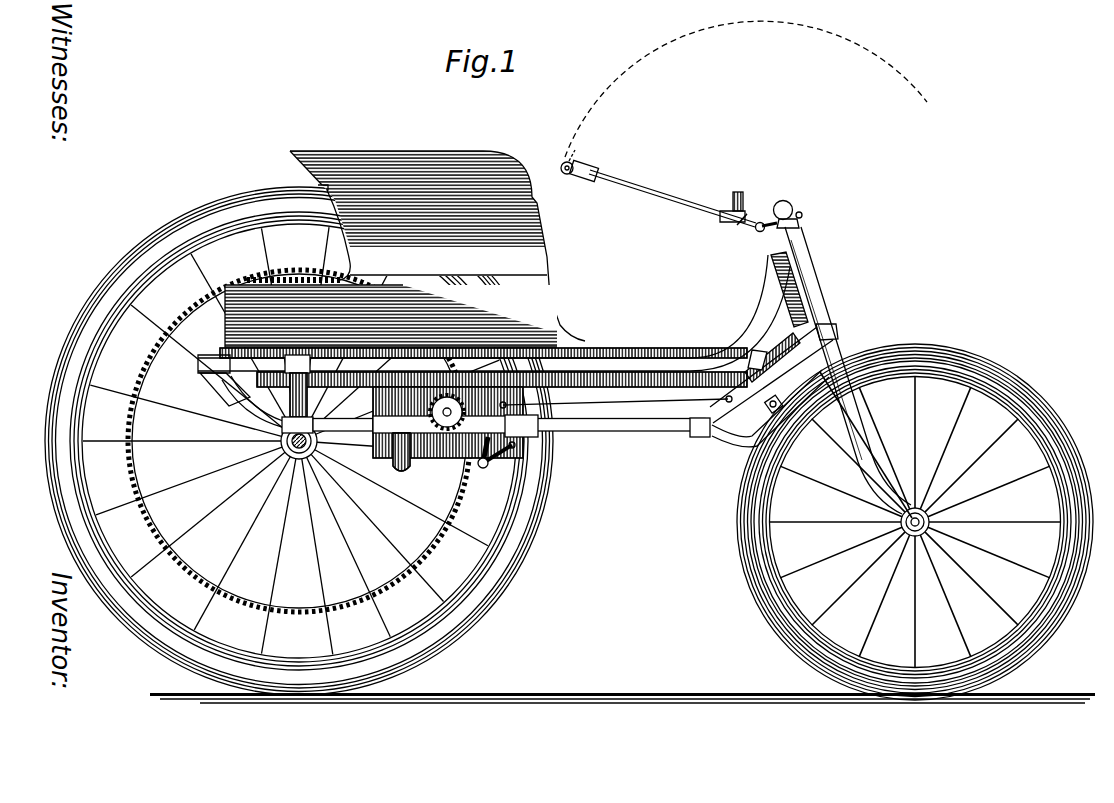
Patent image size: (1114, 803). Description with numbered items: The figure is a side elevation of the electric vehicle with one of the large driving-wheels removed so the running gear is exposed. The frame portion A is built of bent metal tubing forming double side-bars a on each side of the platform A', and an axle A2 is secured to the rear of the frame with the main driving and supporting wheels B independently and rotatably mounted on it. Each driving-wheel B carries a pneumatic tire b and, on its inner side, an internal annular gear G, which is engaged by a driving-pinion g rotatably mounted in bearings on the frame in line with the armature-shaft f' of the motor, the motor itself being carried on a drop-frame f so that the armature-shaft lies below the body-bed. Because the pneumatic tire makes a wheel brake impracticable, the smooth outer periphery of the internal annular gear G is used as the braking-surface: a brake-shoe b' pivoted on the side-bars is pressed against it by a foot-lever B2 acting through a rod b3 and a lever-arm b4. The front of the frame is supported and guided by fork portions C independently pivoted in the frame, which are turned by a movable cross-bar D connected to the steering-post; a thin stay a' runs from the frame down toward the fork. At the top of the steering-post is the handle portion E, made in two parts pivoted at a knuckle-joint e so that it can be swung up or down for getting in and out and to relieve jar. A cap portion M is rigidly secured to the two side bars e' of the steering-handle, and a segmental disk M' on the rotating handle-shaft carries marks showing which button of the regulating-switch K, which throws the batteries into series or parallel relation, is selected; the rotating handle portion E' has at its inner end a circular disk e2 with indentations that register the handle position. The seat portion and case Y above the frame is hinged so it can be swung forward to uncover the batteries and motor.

The seat portion and case Y is at (372, 165).
The driving-wheel B is at (455, 598).
The pneumatic tire b is at (550, 456).
The internal annular gear G is at (299, 441).
The axle A2 is at (298, 440).
The fork portion C is at (863, 435).
The platform A' is at (483, 333).
The side-bar a is at (494, 344).
The frame portion A is at (573, 404).
The armature-shaft f' is at (448, 422).
The driving-pinion g is at (458, 404).
The drop-frame f is at (477, 469).
The lever-arm b4 is at (551, 372).
The rod b3 is at (616, 367).
The brake-shoe b' is at (527, 476).
The regulating-switch K is at (800, 297).
The foot-lever B2 is at (765, 317).
The cross-bar D is at (777, 410).
The fork stay rod a' is at (865, 445).
The handle portion E is at (754, 245).
The knuckle-joint e is at (741, 238).
The cap portion M is at (757, 199).
The segmental disk M' is at (722, 202).
The side bar of steering-handle e' is at (672, 192).
The handle portion E' is at (744, 97).
The circular disk e2 is at (583, 185).